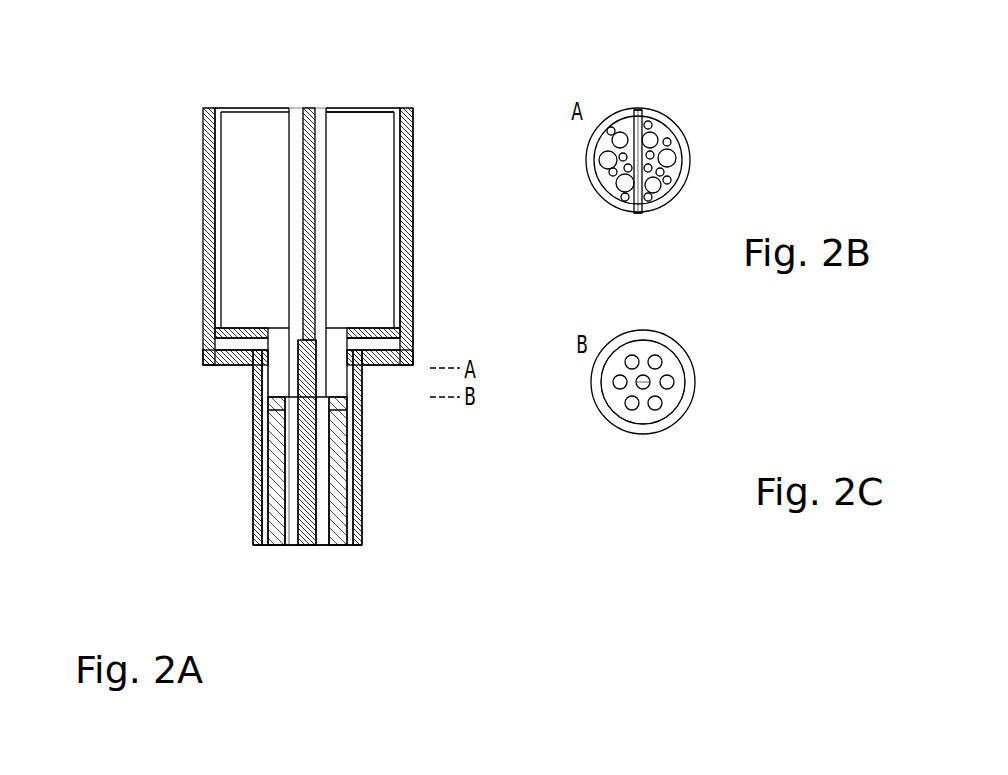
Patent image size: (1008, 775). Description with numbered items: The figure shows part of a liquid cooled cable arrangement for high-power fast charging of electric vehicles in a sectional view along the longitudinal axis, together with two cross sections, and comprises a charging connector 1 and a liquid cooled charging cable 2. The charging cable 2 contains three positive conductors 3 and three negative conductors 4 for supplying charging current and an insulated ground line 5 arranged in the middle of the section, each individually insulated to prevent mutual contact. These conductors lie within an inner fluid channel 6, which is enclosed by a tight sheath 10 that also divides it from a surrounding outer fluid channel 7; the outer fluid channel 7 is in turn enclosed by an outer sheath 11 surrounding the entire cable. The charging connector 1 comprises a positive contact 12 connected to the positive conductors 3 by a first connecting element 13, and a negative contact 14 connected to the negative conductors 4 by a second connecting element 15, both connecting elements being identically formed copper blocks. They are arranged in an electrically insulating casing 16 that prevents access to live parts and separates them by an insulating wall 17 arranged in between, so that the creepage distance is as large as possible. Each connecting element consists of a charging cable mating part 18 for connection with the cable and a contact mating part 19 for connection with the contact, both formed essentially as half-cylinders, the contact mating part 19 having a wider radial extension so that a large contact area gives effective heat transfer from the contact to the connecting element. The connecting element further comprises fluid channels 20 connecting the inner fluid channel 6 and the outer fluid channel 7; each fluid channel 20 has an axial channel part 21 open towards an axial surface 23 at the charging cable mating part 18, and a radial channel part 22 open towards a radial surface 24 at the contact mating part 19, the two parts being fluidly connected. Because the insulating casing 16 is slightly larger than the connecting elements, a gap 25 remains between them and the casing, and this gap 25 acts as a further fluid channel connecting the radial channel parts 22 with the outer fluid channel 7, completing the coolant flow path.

In FIG. 2A, the charging connector 1 is at (154, 207).
In FIG. 2A, the liquid cooled charging cable 2 is at (155, 440).
In FIG. 2A, the positive conductors 3 is at (338, 547).
In FIG. 2B, the positive conductors 3 is at (660, 132).
In FIG. 2C, the positive conductors 3 is at (672, 423).
In FIG. 2A, the negative conductors 4 is at (282, 547).
In FIG. 2B, the negative conductors 4 is at (612, 176).
In FIG. 2C, the negative conductors 4 is at (628, 408).
In FIG. 2A, the ground line 5 is at (305, 547).
In FIG. 2C, the ground line 5 is at (610, 378).
In FIG. 2A, the inner fluid channel 6 is at (268, 547).
In FIG. 2C, the inner fluid channel 6 is at (665, 393).
In FIG. 2A, the outer fluid channel 7 is at (255, 547).
In FIG. 2C, the outer fluid channel 7 is at (694, 380).
In FIG. 2A, the tight sheath 10 is at (265, 547).
In FIG. 2C, the tight sheath 10 is at (688, 398).
In FIG. 2A, the outer sheath 11 is at (257, 515).
In FIG. 2C, the outer sheath 11 is at (690, 352).
In FIG. 2A, the positive contact 12 is at (262, 165).
In FIG. 2A, the first connecting element 13 is at (253, 372).
In FIG. 2B, the first connecting element 13 is at (625, 112).
In FIG. 2A, the negative contact 14 is at (370, 140).
In FIG. 2A, the second connecting element 15 is at (360, 375).
In FIG. 2B, the second connecting element 15 is at (655, 207).
In FIG. 2A, the insulating casing 16 is at (413, 330).
In FIG. 2B, the insulating casing 16 is at (690, 162).
In FIG. 2A, the insulating wall 17 is at (255, 388).
In FIG. 2B, the insulating wall 17 is at (636, 108).
In FIG. 2A, the charging cable mating part 18 is at (253, 425).
In FIG. 2A, the contact mating part 19 is at (203, 338).
In FIG. 2A, the fluid channels 20 is at (322, 332).
In FIG. 2B, the fluid channels 20 is at (650, 112).
In FIG. 2A, the axial channel part 21 is at (257, 358).
In FIG. 2A, the radial channel part 22 is at (228, 334).
In FIG. 2A, the axial surface 23 is at (257, 450).
In FIG. 2A, the radial surface 24 is at (415, 340).
In FIG. 2A, the gap 25 is at (415, 345).
In FIG. 2B, the gap 25 is at (683, 183).